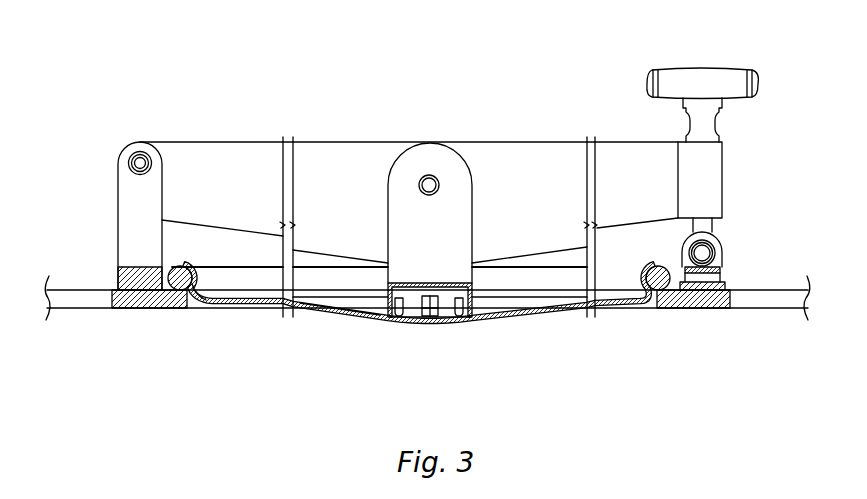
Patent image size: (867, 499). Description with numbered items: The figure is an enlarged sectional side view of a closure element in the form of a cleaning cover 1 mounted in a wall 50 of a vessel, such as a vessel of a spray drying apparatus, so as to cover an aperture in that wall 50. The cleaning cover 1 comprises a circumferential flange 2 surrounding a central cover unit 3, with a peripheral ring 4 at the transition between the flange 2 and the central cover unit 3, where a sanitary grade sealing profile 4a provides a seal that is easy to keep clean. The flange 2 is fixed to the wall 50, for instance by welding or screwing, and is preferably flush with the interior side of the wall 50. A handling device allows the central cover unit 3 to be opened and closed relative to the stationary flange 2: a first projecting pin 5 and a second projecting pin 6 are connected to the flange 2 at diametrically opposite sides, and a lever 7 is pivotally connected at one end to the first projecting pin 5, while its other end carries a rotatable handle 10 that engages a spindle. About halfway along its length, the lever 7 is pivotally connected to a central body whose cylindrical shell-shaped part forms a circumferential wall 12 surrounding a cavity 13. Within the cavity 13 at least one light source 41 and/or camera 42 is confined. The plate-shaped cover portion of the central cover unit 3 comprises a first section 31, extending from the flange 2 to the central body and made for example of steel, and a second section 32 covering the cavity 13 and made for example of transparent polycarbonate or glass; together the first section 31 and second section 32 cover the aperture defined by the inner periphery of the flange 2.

The cleaning cover 1 is at (401, 207).
The circumferential flange 2 is at (157, 309).
The central cover unit 3 is at (316, 327).
The first section 31 is at (348, 320).
The second section 32 is at (393, 320).
The peripheral ring 4 is at (192, 268).
The sanitary grade sealing profile 4a is at (188, 285).
The light source 41 is at (473, 298).
The camera 42 is at (425, 307).
The first projecting pin 5 is at (130, 230).
The second projecting pin 6 is at (714, 254).
The lever 7 is at (352, 160).
The rotatable handle 10 is at (688, 88).
The circumferential wall 12 is at (474, 310).
The cavity 13 is at (448, 294).
The wall 50 is at (785, 296).